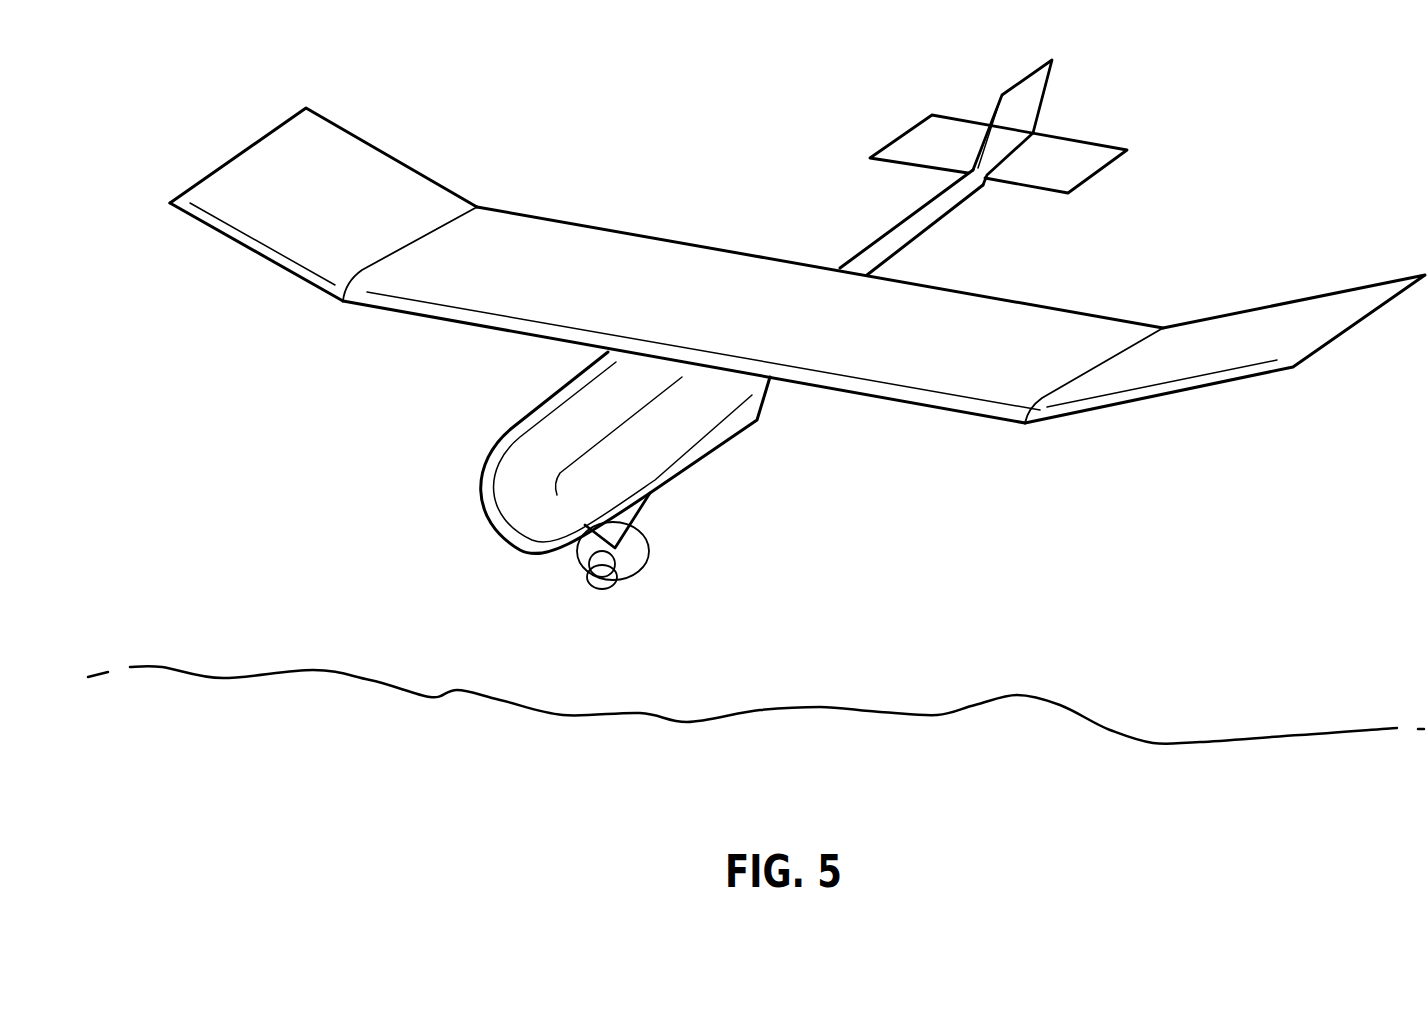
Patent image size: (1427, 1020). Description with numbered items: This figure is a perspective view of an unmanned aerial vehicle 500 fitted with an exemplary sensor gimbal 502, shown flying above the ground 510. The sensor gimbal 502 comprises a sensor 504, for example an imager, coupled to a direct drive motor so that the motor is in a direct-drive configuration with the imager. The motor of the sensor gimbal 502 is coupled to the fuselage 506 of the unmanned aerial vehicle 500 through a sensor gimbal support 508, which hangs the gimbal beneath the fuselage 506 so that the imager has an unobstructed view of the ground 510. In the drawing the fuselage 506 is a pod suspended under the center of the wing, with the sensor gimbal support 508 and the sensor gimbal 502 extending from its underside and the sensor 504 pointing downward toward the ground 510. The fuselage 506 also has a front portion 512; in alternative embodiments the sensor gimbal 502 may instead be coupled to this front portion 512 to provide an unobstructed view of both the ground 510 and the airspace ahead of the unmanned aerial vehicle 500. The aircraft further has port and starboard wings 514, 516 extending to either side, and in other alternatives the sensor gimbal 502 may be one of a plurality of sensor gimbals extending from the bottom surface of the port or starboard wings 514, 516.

The unmanned aerial vehicle 500 is at (771, 353).
The sensor gimbal 502 is at (609, 569).
The sensor 504 is at (599, 578).
The fuselage 506 is at (598, 453).
The sensor gimbal support 508 is at (641, 506).
The ground 510 is at (162, 667).
The front portion of the fuselage 512 is at (492, 542).
The port wing 514 is at (1200, 390).
The starboard wing 516 is at (247, 248).